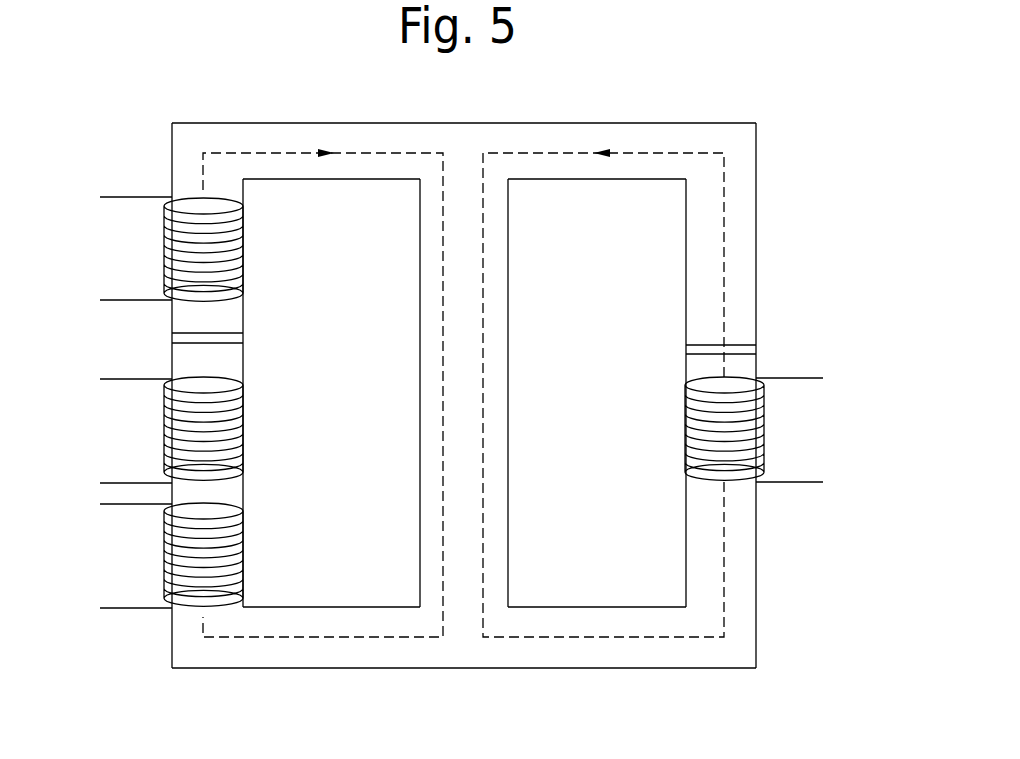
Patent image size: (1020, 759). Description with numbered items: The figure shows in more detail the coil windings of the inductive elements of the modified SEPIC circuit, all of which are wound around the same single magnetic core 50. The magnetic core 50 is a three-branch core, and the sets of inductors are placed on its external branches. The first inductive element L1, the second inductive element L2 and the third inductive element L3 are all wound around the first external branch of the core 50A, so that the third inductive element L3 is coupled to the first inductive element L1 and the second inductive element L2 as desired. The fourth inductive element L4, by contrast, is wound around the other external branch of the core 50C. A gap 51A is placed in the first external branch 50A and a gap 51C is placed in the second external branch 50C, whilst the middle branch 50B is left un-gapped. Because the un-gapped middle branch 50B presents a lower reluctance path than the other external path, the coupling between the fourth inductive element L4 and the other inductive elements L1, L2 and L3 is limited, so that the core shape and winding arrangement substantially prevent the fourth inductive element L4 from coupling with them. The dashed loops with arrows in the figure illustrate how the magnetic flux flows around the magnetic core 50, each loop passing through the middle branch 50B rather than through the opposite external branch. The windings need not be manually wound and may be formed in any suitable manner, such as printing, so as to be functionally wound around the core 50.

The magnetic core 50 is at (832, 118).
The first external branch of the core 50A is at (172, 647).
The middle branch of the core 50B is at (503, 545).
The second external branch of the core 50C is at (752, 548).
The gap 51A is at (235, 339).
The gap 51C is at (693, 350).
The first inductive element L1 is at (140, 247).
The second inductive element L2 is at (140, 425).
The third inductive element L3 is at (140, 553).
The fourth inductive element L4 is at (786, 431).